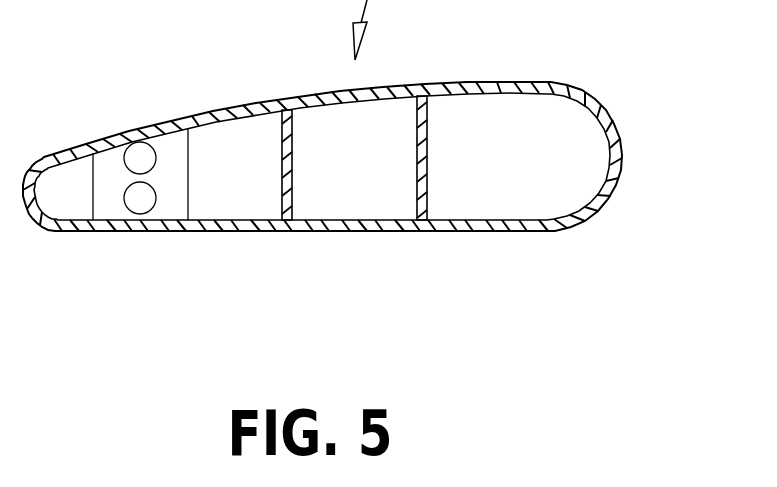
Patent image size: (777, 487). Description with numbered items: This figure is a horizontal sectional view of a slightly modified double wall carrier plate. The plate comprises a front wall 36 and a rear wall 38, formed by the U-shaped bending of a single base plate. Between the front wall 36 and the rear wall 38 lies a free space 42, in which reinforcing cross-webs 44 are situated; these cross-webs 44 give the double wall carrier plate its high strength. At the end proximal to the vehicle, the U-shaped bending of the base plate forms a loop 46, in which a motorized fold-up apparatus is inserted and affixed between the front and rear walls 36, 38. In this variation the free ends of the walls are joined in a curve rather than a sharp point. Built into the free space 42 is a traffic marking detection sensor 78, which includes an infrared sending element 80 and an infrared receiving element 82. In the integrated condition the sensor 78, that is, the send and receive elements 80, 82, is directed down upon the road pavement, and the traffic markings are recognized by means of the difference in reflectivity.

The front wall 36 is at (402, 232).
The rear wall 38 is at (410, 88).
The free space 42 is at (242, 143).
The cross-webs 44 is at (419, 162).
The loop 46 is at (585, 97).
The traffic marking detection sensor 78 is at (175, 148).
The infrared sending element 80 is at (133, 147).
The infrared receiving element 82 is at (130, 207).